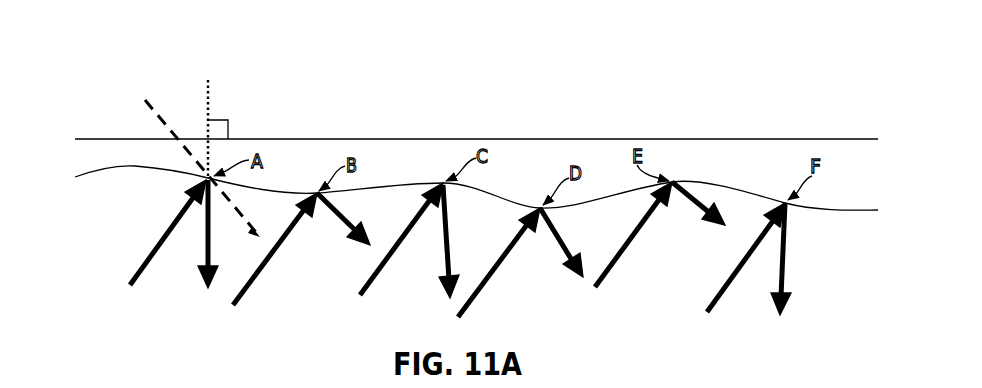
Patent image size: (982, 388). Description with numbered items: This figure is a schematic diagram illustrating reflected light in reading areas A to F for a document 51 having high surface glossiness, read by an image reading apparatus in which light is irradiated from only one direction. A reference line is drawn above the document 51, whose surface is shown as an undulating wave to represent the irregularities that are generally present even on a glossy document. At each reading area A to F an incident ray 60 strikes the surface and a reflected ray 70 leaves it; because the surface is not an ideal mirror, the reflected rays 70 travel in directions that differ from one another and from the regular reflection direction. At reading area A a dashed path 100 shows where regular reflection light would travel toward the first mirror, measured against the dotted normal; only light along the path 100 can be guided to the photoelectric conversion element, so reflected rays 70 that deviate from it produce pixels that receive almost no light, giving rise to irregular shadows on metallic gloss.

The document 51 is at (500, 139).
The incident light 60 is at (265, 272).
The reflected light 70 is at (344, 224).
The path 100 is at (150, 108).